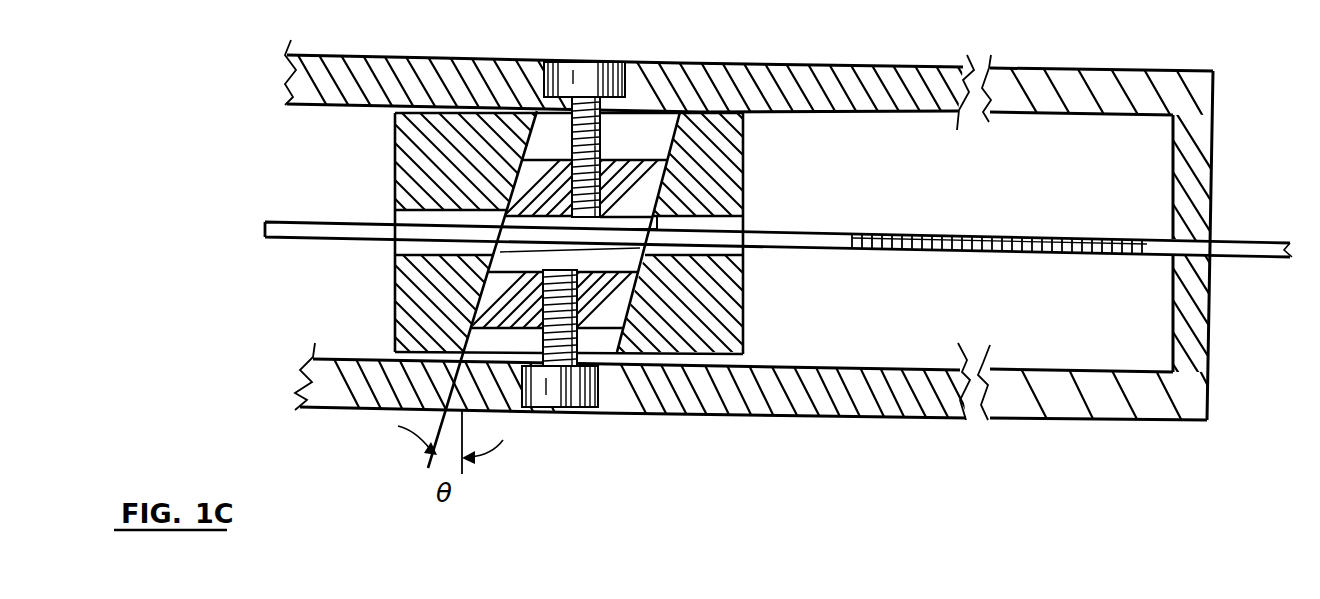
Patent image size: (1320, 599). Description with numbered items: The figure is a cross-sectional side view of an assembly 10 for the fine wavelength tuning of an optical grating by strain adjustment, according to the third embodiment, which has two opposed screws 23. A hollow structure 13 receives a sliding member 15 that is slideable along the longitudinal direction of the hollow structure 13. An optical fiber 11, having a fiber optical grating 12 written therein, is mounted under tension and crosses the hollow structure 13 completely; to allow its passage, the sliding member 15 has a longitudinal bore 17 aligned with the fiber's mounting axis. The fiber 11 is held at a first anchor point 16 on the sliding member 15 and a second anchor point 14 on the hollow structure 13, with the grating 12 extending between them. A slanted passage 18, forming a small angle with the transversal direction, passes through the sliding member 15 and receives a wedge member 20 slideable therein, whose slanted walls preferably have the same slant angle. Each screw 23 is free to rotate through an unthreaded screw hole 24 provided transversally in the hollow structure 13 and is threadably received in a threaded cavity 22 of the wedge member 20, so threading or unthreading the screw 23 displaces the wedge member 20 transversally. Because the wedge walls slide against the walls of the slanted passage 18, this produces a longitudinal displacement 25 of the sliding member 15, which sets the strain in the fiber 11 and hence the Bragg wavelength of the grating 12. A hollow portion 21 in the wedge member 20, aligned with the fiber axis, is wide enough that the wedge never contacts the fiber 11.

The assembly 10 is at (748, 50).
The optical fiber 11 is at (310, 226).
The fiber optical grating 12 is at (893, 236).
The hollow structure 13 is at (431, 82).
The second anchor point 14 is at (1172, 235).
The sliding member 15 is at (423, 147).
The first anchor point 16 is at (743, 230).
The longitudinal bore 17 is at (390, 250).
The slanted passage 18 is at (647, 137).
The wedge member 20 is at (537, 183).
The hollow portion 21 is at (728, 290).
The threaded cavity 22 is at (570, 270).
The screw 23 is at (580, 80).
The screw hole 24 is at (537, 80).
The displacement 25 is at (242, 230).